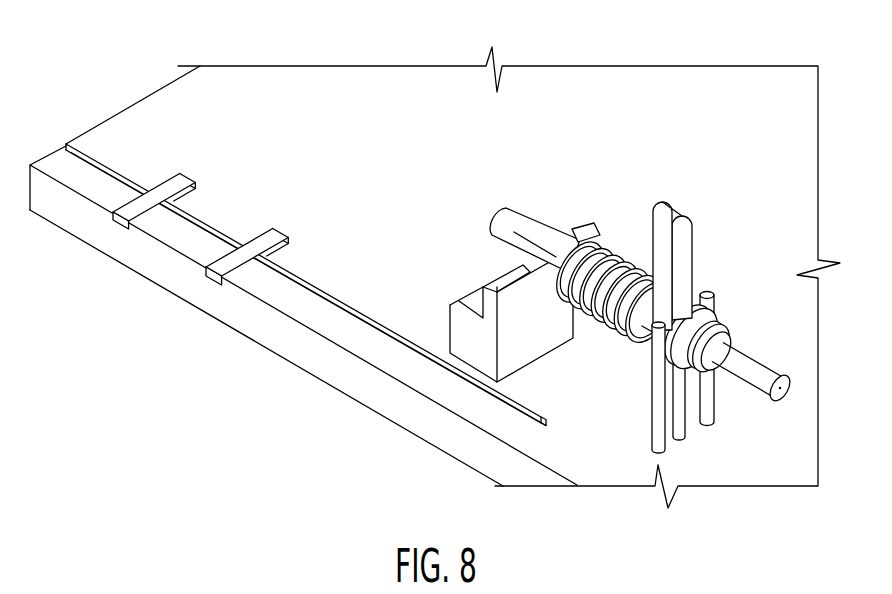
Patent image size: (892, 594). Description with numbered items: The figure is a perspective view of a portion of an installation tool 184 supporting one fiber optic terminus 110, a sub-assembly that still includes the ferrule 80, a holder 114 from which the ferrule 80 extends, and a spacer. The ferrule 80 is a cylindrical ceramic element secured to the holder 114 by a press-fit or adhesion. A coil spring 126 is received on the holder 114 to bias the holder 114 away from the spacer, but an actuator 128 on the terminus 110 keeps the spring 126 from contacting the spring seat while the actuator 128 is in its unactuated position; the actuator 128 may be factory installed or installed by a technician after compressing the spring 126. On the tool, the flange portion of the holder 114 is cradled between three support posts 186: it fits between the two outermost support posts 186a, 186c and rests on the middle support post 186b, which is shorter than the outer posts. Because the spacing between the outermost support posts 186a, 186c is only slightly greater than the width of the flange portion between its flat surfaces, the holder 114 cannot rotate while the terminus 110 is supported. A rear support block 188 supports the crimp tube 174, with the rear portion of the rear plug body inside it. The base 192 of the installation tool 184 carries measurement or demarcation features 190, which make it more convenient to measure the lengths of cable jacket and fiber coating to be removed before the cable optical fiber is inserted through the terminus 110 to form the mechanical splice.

The installation tool 184 is at (334, 84).
The base 192 is at (318, 164).
The demarcation features 190 is at (310, 295).
The rear support block 188 is at (450, 308).
The crimp tube 174 is at (530, 218).
The terminus 110 is at (549, 226).
The spring 126 is at (637, 262).
The actuator 128 is at (684, 208).
The holder 114 is at (725, 313).
The ferrule 80 is at (766, 362).
The support posts 186 is at (643, 430).
The outermost support post 186a is at (650, 432).
The middle support post 186b is at (675, 412).
The outermost support post 186c is at (715, 408).